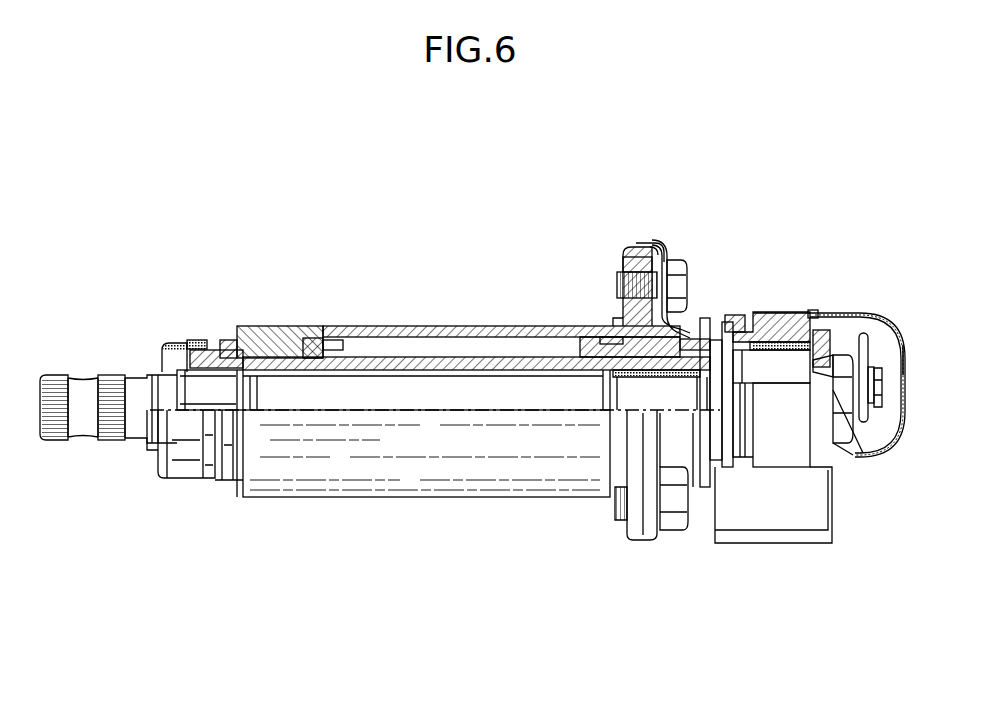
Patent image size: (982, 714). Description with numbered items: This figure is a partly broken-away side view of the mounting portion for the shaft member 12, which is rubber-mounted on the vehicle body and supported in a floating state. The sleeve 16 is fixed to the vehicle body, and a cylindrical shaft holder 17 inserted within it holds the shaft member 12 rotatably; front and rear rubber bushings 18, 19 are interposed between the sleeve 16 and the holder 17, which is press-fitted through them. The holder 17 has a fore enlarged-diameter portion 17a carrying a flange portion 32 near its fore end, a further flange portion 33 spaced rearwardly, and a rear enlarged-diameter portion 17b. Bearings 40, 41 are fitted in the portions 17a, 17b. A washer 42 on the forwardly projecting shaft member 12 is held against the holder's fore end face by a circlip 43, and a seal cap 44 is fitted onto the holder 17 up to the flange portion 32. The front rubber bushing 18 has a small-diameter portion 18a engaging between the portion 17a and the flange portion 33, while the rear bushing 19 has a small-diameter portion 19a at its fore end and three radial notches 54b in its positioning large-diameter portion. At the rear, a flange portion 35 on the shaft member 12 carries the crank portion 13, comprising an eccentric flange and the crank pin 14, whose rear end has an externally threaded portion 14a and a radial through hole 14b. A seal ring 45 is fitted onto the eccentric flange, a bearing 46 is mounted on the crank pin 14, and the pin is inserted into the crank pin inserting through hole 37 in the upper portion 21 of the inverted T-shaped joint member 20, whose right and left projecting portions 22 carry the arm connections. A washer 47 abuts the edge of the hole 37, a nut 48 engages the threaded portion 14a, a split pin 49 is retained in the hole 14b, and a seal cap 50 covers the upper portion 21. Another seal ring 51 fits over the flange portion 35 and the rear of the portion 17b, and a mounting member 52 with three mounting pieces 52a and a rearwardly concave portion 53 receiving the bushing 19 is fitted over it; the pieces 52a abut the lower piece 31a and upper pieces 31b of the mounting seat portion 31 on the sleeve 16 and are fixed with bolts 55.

The shaft member 12 is at (368, 400).
The crank portion 13 is at (755, 330).
The crank pin 14 is at (790, 328).
The externally threaded portion 14a is at (845, 352).
The through hole 14b is at (883, 392).
The sleeve 16 is at (432, 333).
The shaft holder 17 is at (485, 360).
The fore enlarged-diameter portion 17a is at (230, 345).
The rear enlarged-diameter portion 17b is at (600, 362).
The front rubber bushing 18 is at (283, 330).
The small-diameter portion 18a is at (312, 345).
The rear rubber bushing 19 is at (603, 332).
The small-diameter portion 19a is at (615, 332).
The joint member 20 is at (804, 450).
The upper portion 21 is at (818, 325).
The projecting portions 22 is at (798, 525).
The mounting seat portion 31 is at (632, 272).
The lower piece 31a is at (632, 527).
The upper pieces 31b is at (655, 248).
The flange portion 32 is at (218, 350).
The flange portion 33 is at (340, 345).
The flange portion 35 is at (727, 455).
The crank pin inserting through hole 37 is at (814, 313).
The bearing 40 is at (218, 374).
The bearing 41 is at (648, 385).
The washer 42 is at (195, 343).
The circlip 43 is at (175, 390).
The seal cap 44 is at (172, 345).
The seal ring 45 is at (734, 317).
The bearing 46 is at (793, 357).
The washer 47 is at (825, 377).
The nut 48 is at (874, 367).
The split pin 49 is at (868, 350).
The seal cap 50 is at (906, 355).
The seal ring 51 is at (703, 332).
The mounting member 52 is at (643, 250).
The mounting pieces 52a is at (664, 262).
The concave portion 53 is at (693, 332).
The notches 54b is at (703, 487).
The bolts 55 is at (618, 280).